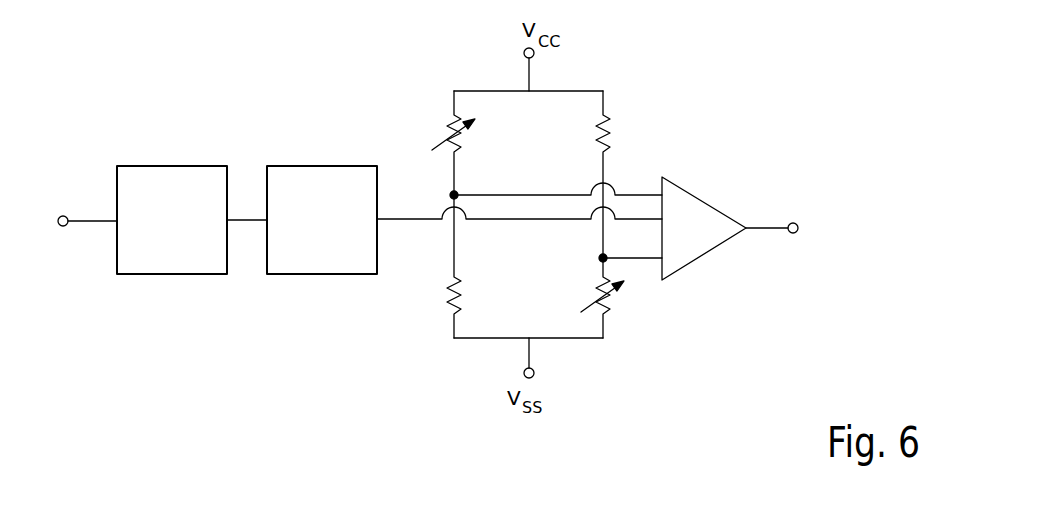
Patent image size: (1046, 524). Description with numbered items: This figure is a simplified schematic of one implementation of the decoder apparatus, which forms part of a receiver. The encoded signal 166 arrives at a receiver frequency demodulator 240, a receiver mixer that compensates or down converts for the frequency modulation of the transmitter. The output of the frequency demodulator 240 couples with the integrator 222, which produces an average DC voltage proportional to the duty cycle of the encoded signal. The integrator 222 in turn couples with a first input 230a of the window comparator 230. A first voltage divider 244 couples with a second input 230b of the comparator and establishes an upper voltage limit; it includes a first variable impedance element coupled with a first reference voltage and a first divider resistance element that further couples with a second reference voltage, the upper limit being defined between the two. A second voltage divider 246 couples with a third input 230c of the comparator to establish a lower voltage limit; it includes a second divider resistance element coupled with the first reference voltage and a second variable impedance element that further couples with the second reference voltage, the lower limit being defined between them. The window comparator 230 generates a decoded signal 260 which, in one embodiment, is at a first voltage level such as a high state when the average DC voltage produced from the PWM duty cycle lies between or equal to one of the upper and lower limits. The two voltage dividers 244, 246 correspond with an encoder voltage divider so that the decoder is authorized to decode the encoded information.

The encoded signal 166 is at (95, 221).
The receiver frequency demodulator 240 is at (192, 233).
The integrator 222 is at (342, 233).
The first voltage divider 244 is at (380, 362).
The second voltage divider 246 is at (628, 363).
The window comparator 230 is at (685, 211).
The first input 230a is at (662, 218).
The second input 230b is at (640, 194).
The third input 230c is at (645, 260).
The decoded signal 260 is at (768, 230).